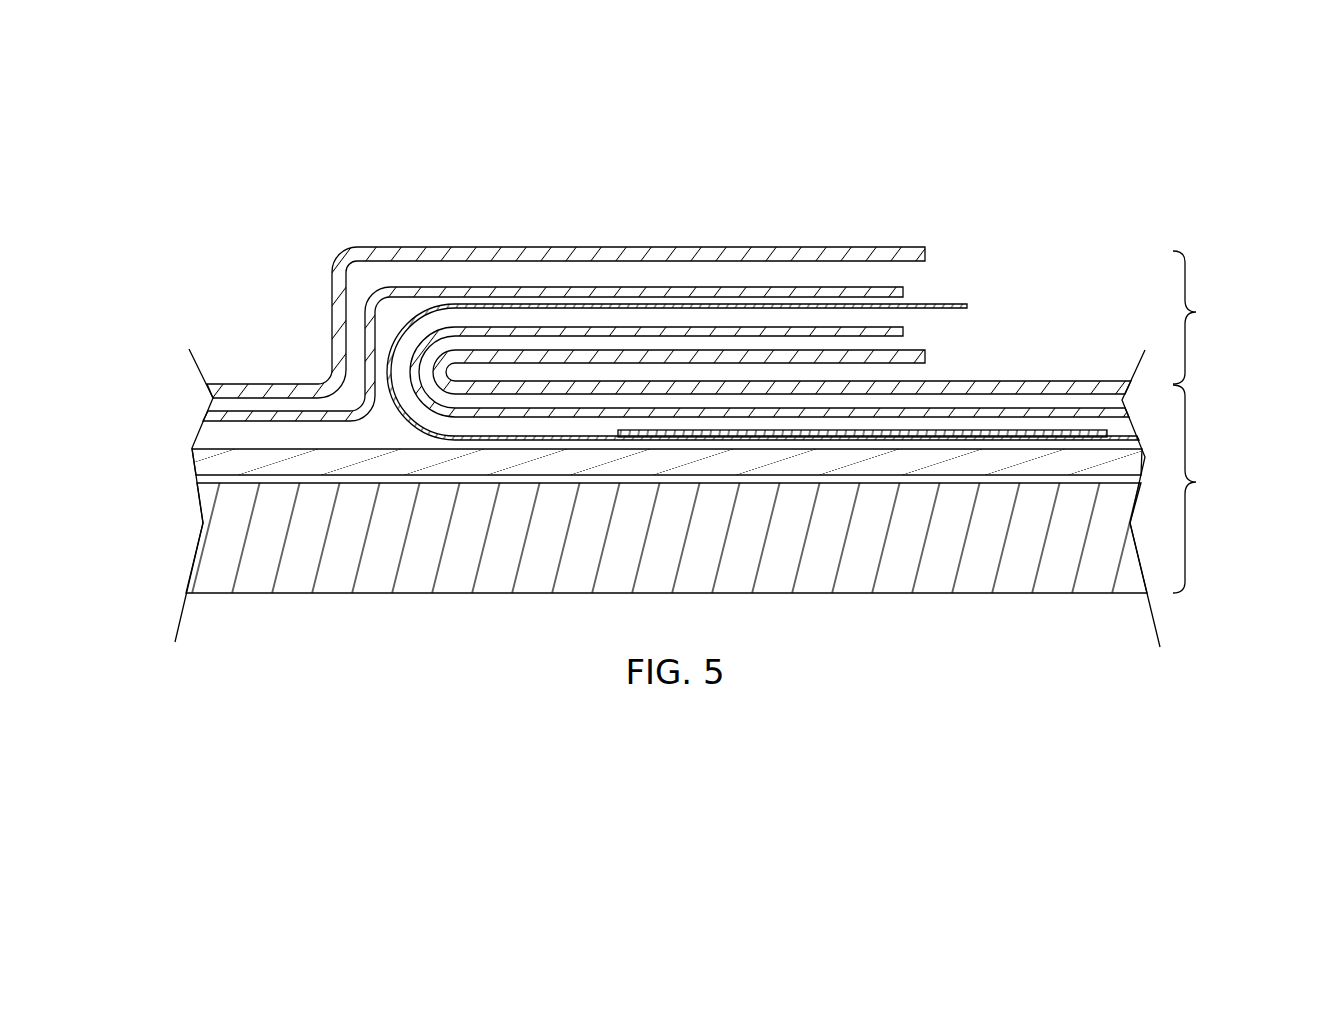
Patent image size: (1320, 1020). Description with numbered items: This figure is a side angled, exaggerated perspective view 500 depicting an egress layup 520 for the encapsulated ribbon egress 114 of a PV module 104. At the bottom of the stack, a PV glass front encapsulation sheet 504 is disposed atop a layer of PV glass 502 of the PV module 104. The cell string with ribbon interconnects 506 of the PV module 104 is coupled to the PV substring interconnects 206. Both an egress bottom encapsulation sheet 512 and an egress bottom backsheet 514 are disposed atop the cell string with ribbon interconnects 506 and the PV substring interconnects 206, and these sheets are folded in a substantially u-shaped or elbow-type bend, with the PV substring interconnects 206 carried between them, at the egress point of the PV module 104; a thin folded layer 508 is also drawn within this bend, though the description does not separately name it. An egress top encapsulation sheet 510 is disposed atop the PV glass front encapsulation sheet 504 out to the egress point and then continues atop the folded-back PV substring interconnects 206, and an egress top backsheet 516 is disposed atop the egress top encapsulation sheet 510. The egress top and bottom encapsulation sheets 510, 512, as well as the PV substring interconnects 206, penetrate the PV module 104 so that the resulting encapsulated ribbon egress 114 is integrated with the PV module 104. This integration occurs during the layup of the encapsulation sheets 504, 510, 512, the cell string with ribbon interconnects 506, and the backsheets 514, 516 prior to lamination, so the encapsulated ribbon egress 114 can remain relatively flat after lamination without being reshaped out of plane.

The encapsulated ribbon egress 114 is at (404, 152).
The cross-sectional view of display 500 is at (983, 125).
The PV glass 502 is at (285, 573).
The PV glass front encapsulation sheet 504 is at (193, 455).
The cell string with ribbon interconnects 506 is at (1012, 430).
The flexible display layer 508 is at (776, 303).
The egress top encapsulation sheet 510 is at (413, 285).
The egress bottom encapsulation sheet 512 is at (500, 326).
The egress bottom backsheet 514 is at (580, 349).
The egress top backsheet 516 is at (679, 246).
The egress layup 520 is at (1210, 317).
The PV module 104 is at (1210, 489).
The PV substring interconnects 206 is at (453, 441).